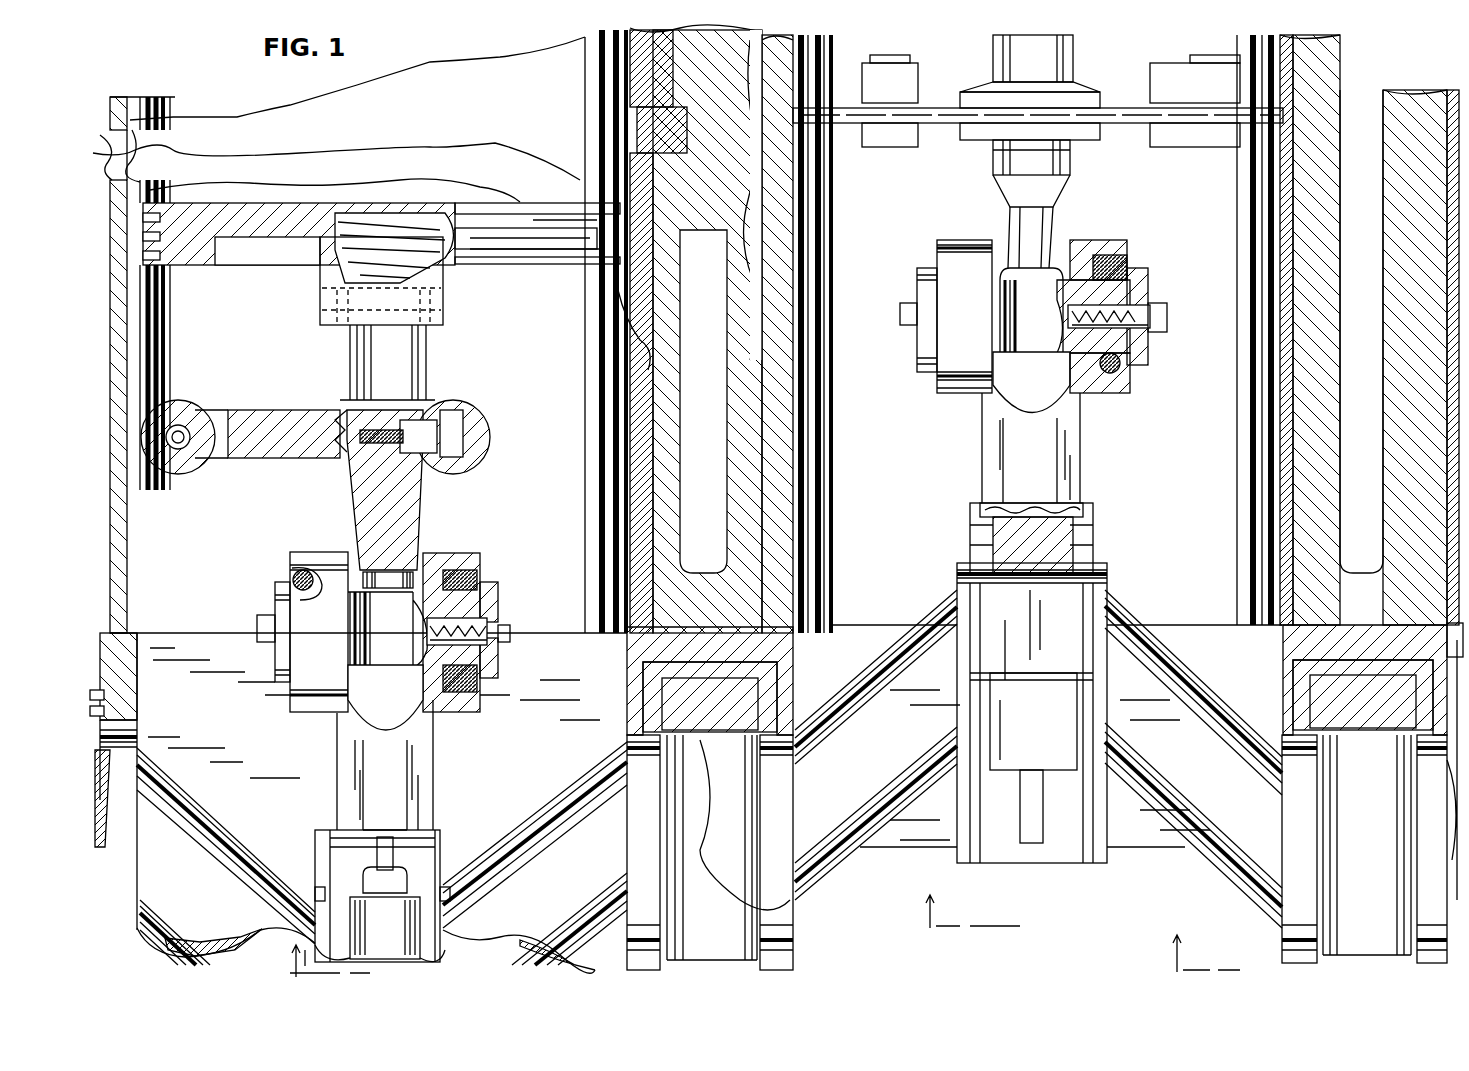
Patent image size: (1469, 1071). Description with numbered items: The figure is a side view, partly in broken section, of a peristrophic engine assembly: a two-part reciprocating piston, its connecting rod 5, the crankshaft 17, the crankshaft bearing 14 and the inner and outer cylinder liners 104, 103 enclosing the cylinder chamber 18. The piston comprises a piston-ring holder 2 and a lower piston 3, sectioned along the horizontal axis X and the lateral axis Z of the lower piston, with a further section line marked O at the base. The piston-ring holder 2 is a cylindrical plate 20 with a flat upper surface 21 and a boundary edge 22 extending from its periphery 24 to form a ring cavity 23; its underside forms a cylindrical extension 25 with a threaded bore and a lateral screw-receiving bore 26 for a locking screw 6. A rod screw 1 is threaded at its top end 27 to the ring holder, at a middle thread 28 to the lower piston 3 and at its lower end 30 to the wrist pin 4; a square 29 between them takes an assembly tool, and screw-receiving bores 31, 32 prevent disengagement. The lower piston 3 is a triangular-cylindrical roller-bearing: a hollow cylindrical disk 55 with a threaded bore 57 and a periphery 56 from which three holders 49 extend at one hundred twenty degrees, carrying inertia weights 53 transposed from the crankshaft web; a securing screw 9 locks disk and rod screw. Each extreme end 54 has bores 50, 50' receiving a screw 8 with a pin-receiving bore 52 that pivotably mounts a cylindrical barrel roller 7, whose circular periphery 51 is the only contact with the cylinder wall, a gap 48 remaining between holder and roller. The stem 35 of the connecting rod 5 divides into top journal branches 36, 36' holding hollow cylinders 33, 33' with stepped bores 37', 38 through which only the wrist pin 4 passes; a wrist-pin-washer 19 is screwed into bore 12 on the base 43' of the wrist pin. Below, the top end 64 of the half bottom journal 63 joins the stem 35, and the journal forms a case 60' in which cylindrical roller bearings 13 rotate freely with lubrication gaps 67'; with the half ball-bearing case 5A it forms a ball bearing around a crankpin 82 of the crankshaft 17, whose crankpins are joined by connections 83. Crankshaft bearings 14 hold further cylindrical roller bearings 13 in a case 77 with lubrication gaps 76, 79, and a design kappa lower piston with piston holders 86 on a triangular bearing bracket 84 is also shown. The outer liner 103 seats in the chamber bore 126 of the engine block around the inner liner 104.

The rod screw 1 is at (1044, 70).
The piston-ring holder 2 is at (591, 565).
The lower piston 3 is at (717, 691).
The wrist pin 4 is at (374, 651).
The connecting rod 5 is at (375, 791).
The half ball-bearing case 5A is at (1018, 736).
The locking screw 6 is at (320, 300).
The cylindrical barrel roller 7 is at (318, 437).
The screw 8 is at (178, 400).
The securing screw 9 is at (355, 470).
The screw-receiving bore 12 is at (1150, 310).
The cylindrical roller bearings 13 is at (1038, 624).
The crankshaft bearing 14 is at (715, 793).
The crankshaft 17 is at (567, 886).
The cylinder chamber 18 is at (440, 85).
The wrist-pin-washer 19 is at (1148, 267).
The cylindrical plate 20 is at (547, 230).
The flat upper surface 21 is at (345, 213).
The boundary edge 22 is at (175, 212).
The cavity 23 is at (612, 248).
The periphery 24 is at (575, 242).
The cylindrical extension 25 is at (558, 262).
The screw-receiving bore 26 is at (437, 323).
The top end 27 is at (405, 245).
The middle thread 28 is at (345, 462).
The square 29 is at (1060, 165).
The lower end 30 is at (1005, 265).
The screw-receiving bore 31 is at (430, 283).
The screw-receiving bore 32 is at (340, 470).
The hollow cylinder 33 is at (595, 565).
The hollow cylinder 33' is at (1164, 214).
The stem 35 is at (440, 790).
The top journal branch 36 is at (990, 395).
The top journal branch 36' is at (469, 739).
The stepped bore 37' is at (1158, 396).
The stepped bore 38 is at (1063, 262).
The base 43' is at (1139, 363).
The gap 48 is at (218, 452).
The holder 49 is at (262, 458).
The bore 50 is at (204, 382).
The threaded bore 50' is at (486, 493).
The circular periphery 51 is at (468, 460).
The pin-receiving bore 52 is at (425, 450).
The inertia weights 53 is at (290, 410).
The extreme end 54 is at (470, 432).
The hollow cylindrical disk 55 is at (400, 428).
The periphery 56 is at (355, 410).
The bore 57 is at (340, 410).
The case 60' is at (1144, 538).
The half bottom journal 63 is at (370, 936).
The top end 64 is at (1000, 502).
The small gap 67' is at (1142, 480).
The small gap 76 is at (645, 680).
The case 77 is at (795, 735).
The small gap 79 is at (1300, 665).
The crankpins 82 is at (770, 960).
The connections 83 is at (227, 893).
The triangular bearing bracket 84 is at (993, 135).
The piston holders 86 is at (1195, 140).
The outer cylinder liner 103 is at (1415, 90).
The inner cylinder liner 104 is at (165, 117).
The chamber bore 126 is at (720, 600).
The horizontal axis X is at (275, 325).
The lateral axis Z is at (480, 370).
The section line O is at (190, 973).